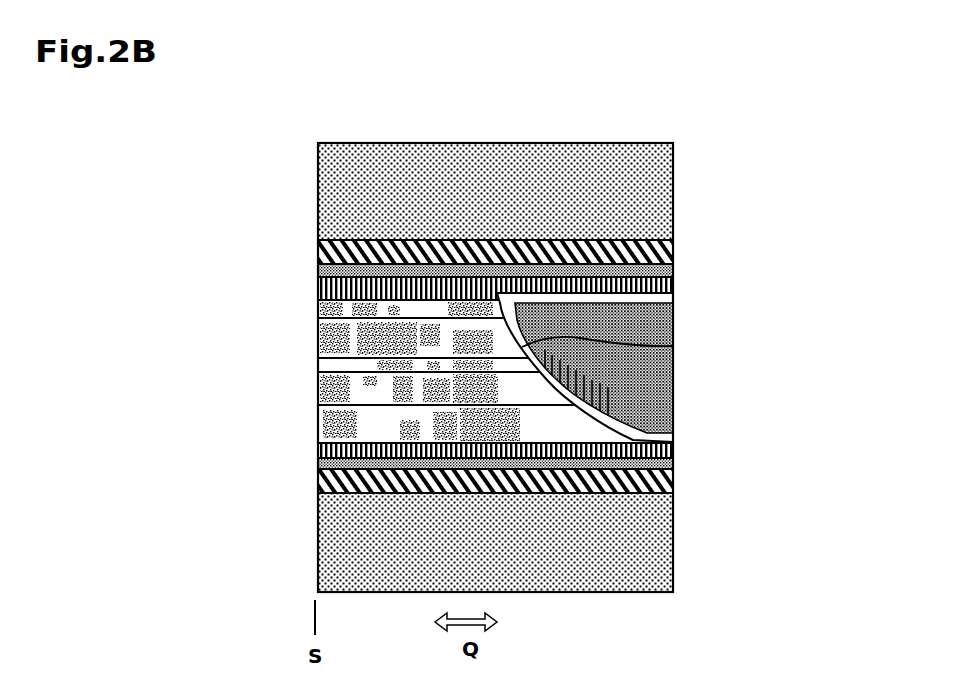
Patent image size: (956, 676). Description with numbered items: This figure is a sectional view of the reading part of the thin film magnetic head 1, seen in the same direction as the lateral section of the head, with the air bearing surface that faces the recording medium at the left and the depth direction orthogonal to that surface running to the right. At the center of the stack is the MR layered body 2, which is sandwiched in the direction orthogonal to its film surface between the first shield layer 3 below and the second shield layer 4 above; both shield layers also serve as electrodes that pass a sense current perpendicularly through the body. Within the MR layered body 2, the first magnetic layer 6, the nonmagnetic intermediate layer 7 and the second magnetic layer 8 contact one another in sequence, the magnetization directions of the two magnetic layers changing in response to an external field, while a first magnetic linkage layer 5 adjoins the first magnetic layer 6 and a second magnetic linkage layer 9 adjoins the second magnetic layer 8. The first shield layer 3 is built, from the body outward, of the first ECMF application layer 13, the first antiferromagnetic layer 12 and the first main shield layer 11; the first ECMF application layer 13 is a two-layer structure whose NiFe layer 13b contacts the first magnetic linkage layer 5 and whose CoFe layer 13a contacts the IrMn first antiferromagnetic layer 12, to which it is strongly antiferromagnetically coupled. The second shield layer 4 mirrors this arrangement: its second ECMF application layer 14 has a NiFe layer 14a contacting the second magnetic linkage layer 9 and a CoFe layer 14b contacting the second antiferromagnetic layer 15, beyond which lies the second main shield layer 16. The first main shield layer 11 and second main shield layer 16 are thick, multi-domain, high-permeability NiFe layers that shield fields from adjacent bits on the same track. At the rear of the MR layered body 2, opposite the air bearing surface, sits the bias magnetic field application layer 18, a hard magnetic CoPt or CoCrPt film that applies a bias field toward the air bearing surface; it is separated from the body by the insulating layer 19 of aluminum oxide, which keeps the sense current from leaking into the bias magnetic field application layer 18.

The thin film magnetic head 1 is at (476, 113).
The MR layered body 2 is at (241, 303).
The first shield layer 3 is at (188, 435).
The second shield layer 4 is at (188, 172).
The first magnetic linkage layer 5 is at (318, 425).
The first magnetic layer 6 is at (318, 398).
The nonmagnetic intermediate layer 7 is at (318, 368).
The second magnetic layer 8 is at (318, 346).
The second magnetic linkage layer 9 is at (318, 315).
The first main shield layer 11 is at (318, 548).
The first antiferromagnetic layer 12 is at (318, 486).
The first ECMF application layer 13 is at (230, 433).
The CoFe layer 13a is at (318, 463).
The NiFe layer 13b is at (318, 447).
The second ECMF application layer 14 is at (230, 258).
The NiFe layer 14a is at (318, 288).
The CoFe layer 14b is at (318, 270).
The second antiferromagnetic layer 15 is at (318, 253).
The second main shield layer 16 is at (318, 193).
The bias magnetic field application layer 18 is at (673, 390).
The insulating layer 19 is at (673, 346).